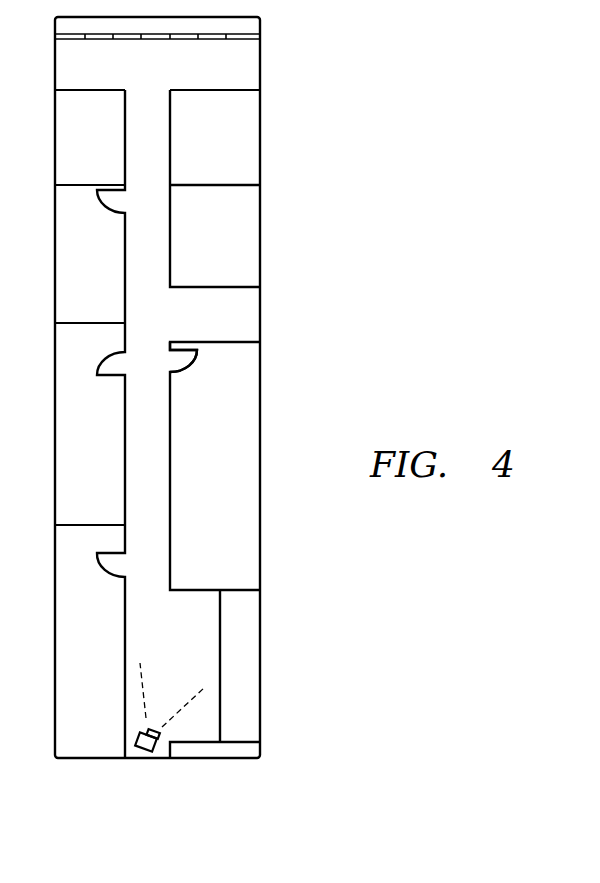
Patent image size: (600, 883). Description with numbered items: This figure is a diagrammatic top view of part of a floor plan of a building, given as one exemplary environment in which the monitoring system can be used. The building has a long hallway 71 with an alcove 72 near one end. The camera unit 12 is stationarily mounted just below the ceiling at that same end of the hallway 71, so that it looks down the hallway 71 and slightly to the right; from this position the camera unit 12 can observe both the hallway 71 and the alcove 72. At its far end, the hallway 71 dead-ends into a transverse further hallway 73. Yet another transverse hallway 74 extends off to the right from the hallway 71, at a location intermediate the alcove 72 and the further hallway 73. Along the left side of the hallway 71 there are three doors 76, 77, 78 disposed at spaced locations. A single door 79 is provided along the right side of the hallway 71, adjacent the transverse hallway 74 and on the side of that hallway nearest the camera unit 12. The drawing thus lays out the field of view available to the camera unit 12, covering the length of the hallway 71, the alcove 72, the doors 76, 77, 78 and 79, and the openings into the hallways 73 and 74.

The camera unit 12 is at (140, 757).
The hallway 71 is at (160, 480).
The alcove 72 is at (220, 645).
The further hallway 73 is at (254, 61).
The transverse hallway 74 is at (250, 313).
The door 76 is at (118, 560).
The door 77 is at (118, 372).
The door 78 is at (118, 196).
The door 79 is at (168, 352).